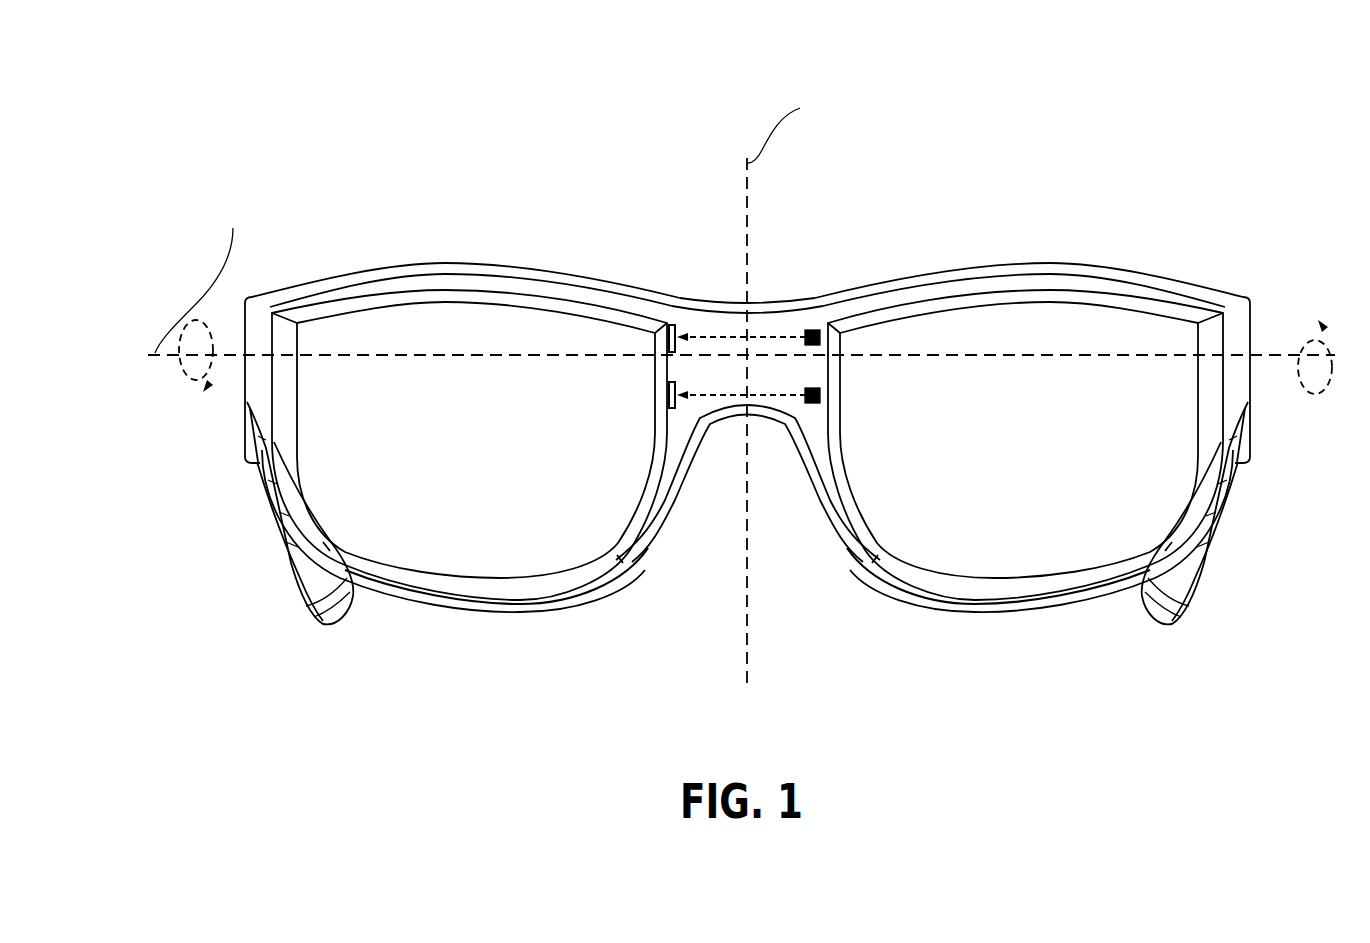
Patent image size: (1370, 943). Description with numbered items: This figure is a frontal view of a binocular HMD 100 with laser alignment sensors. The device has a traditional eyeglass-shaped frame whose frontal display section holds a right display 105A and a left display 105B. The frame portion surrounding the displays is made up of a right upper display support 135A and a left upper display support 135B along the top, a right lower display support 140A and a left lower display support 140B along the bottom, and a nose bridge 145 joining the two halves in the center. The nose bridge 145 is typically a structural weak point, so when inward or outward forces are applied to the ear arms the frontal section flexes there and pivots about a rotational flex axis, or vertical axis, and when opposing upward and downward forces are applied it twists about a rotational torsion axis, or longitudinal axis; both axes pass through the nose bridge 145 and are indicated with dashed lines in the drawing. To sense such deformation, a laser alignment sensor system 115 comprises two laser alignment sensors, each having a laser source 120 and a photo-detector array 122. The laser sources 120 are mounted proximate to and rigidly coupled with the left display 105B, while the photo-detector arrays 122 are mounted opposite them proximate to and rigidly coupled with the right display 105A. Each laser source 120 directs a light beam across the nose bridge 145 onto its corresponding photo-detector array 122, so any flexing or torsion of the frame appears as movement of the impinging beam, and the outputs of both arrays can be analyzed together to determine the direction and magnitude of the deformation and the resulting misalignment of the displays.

The binocular HMD 100 is at (1115, 118).
The right display 105A is at (478, 471).
The left display 105B is at (1048, 471).
The laser alignment sensor system 115 is at (733, 438).
The laser source 120 is at (810, 330).
The photo-detector array 122 is at (673, 324).
The right upper display support 135A is at (424, 263).
The left upper display support 135B is at (983, 267).
The right lower display support 140A is at (512, 596).
The left lower display support 140B is at (992, 595).
The nose bridge 145 is at (722, 284).